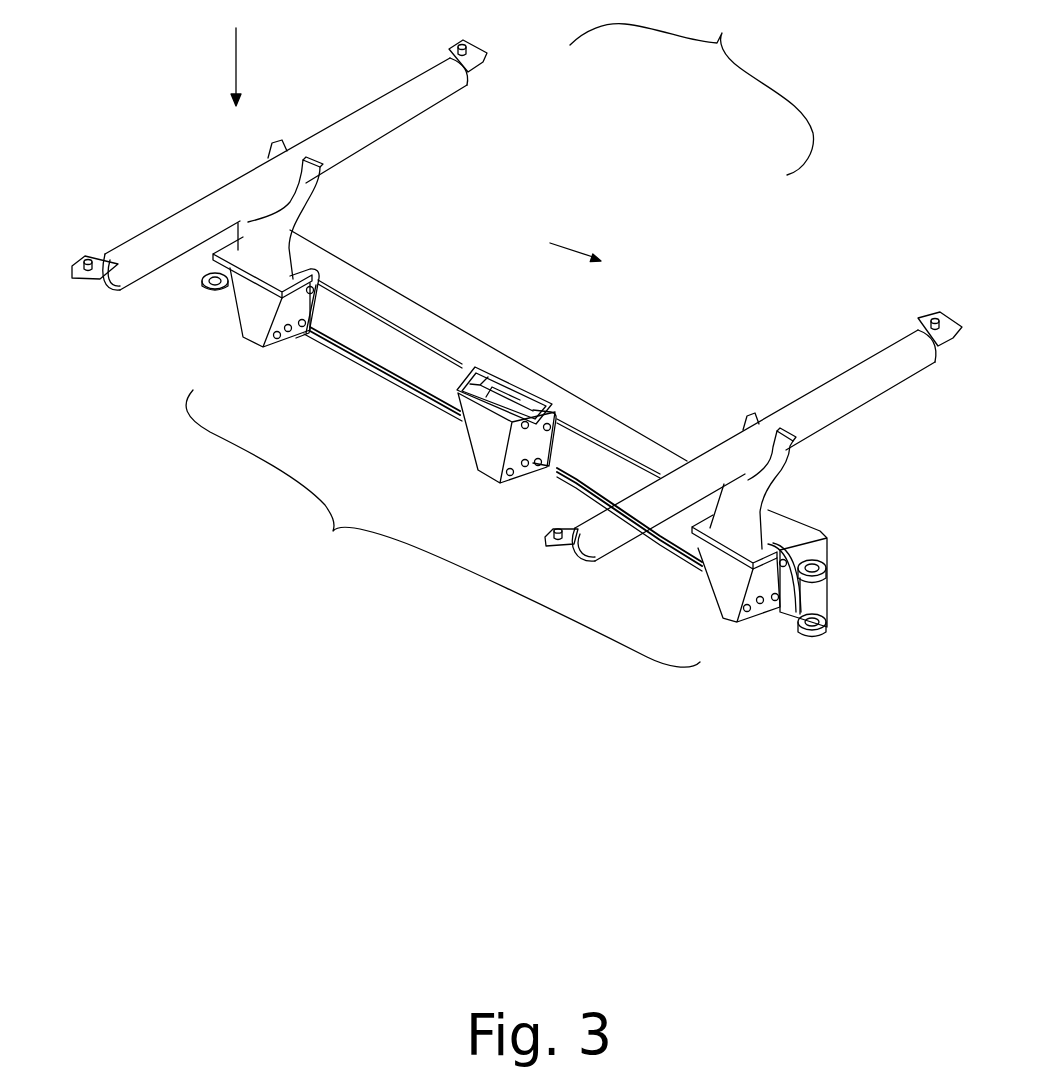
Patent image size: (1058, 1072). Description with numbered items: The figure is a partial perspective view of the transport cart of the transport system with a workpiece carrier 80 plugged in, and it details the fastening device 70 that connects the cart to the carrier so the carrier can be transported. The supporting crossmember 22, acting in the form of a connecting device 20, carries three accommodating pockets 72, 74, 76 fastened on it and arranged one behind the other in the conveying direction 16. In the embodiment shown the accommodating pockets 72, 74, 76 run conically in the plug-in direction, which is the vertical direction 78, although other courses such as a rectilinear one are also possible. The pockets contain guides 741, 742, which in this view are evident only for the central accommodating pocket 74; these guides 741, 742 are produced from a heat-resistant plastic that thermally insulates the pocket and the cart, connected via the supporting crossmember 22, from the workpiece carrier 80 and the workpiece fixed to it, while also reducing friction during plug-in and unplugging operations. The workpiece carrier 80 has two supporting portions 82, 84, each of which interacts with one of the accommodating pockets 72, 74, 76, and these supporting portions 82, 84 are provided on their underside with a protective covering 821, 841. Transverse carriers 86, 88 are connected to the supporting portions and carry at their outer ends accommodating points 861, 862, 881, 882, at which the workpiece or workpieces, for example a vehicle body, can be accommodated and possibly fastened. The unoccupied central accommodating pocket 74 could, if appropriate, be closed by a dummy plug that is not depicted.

The conveying direction 16 is at (578, 240).
The connecting device 20 is at (430, 282).
The supporting crossmember 22 is at (488, 345).
The fastening device 70 is at (443, 528).
The accommodating pocket 72 is at (245, 336).
The accommodating pocket 74 is at (480, 478).
The accommodating pocket 76 is at (716, 605).
The vertical direction 78 is at (236, 72).
The workpiece carrier 80 is at (691, 87).
The supporting portion 82 is at (322, 186).
The supporting portion 84 is at (805, 450).
The transverse carrier 86 is at (470, 76).
The transverse carrier 88 is at (857, 368).
The guide 741 is at (457, 394).
The guide 742 is at (538, 410).
The protective covering 821 is at (315, 271).
The protective covering 841 is at (770, 540).
The accommodating point 861 is at (468, 47).
The accommodating point 862 is at (88, 257).
The accommodating point 881 is at (932, 313).
The accommodating point 882 is at (560, 527).